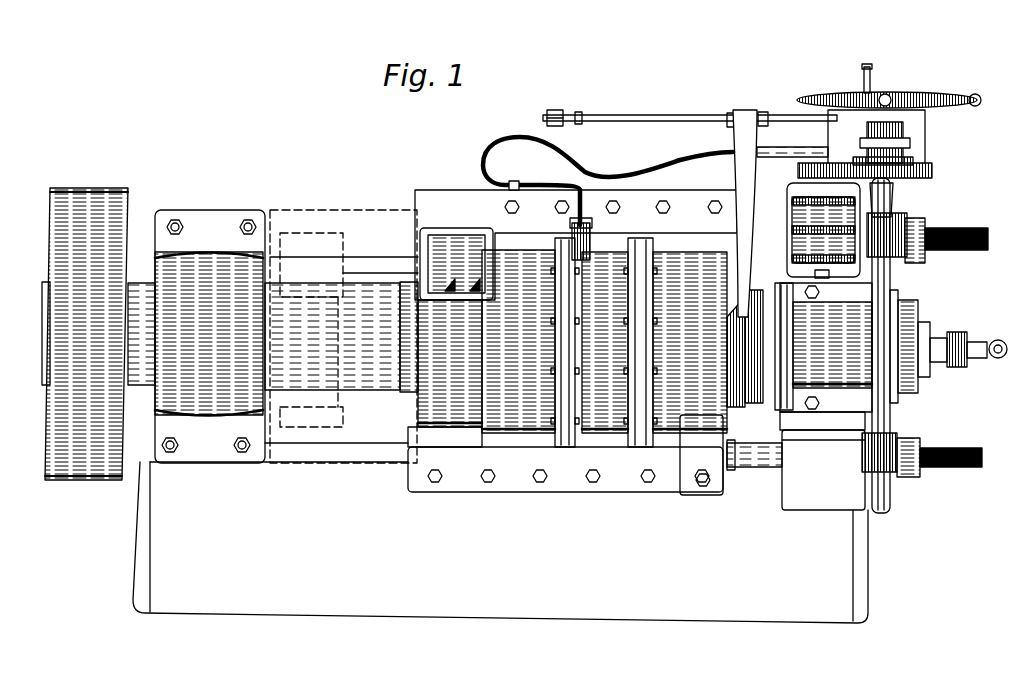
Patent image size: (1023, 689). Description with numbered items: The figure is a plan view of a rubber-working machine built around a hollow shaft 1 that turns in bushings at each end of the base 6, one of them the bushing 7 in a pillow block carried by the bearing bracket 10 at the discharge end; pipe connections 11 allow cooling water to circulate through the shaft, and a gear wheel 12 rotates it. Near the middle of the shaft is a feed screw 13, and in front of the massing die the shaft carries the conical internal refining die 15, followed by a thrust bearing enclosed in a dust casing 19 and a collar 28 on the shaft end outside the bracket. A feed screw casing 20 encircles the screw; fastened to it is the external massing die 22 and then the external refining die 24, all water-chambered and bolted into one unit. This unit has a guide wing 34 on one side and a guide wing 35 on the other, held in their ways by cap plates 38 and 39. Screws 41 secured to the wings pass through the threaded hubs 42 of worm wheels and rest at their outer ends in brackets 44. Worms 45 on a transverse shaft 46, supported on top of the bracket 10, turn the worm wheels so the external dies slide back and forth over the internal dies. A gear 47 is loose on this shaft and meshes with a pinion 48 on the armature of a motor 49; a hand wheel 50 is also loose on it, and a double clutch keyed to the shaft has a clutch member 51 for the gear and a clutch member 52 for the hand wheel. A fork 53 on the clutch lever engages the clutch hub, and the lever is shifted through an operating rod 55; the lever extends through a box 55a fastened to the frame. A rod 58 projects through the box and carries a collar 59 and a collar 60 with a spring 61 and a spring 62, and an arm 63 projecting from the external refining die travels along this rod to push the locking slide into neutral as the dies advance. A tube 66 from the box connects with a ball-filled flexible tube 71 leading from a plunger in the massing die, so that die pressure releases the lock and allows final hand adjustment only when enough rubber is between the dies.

The shaft 1 is at (375, 380).
The base 6 is at (500, 533).
The bushing 7 is at (210, 336).
The bearing bracket 10 is at (870, 420).
The pipe connections 11 is at (972, 345).
The gear wheel 12 is at (87, 187).
The feed screw 13 is at (447, 283).
The internal refining die 15 is at (737, 408).
The dust casing 19 is at (780, 404).
The feed screw casing 20 is at (517, 428).
The external massing die 22 is at (607, 429).
The external refining die 24 is at (685, 427).
The collar 28 is at (908, 398).
The guide wing 34 is at (445, 436).
The guide wing 35 is at (460, 212).
The cap plate 38 is at (565, 469).
The cap plate 39 is at (613, 213).
The screws 41 is at (958, 253).
The threaded hubs 42 is at (897, 263).
The brackets 44 is at (918, 225).
The worms 45 is at (857, 477).
The shaft 46 is at (920, 380).
The gear 47 is at (932, 170).
The pinion 48 is at (820, 183).
The motor 49 is at (800, 197).
The hand wheel 50 is at (913, 95).
The clutch member 51 is at (913, 161).
The clutch member 52 is at (907, 125).
The fork 53 is at (925, 138).
The operating rod 55 is at (868, 84).
The box 55a is at (981, 102).
The rod 58 is at (662, 115).
The collar 59 is at (764, 112).
The collar 60 is at (550, 110).
The spring 61 is at (743, 113).
The spring 62 is at (580, 112).
The arm 63 is at (730, 150).
The tube 66 is at (792, 143).
The flexible tube 71 is at (609, 179).